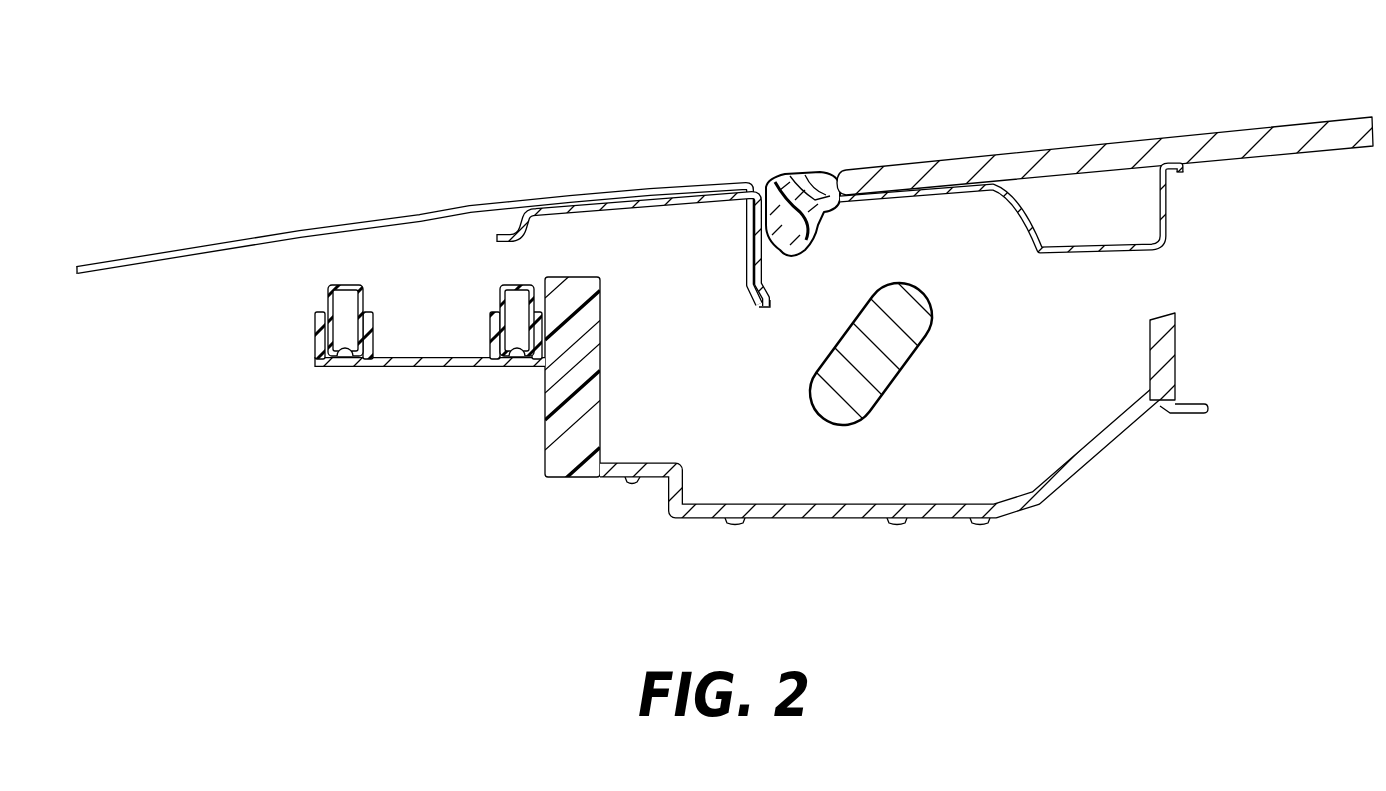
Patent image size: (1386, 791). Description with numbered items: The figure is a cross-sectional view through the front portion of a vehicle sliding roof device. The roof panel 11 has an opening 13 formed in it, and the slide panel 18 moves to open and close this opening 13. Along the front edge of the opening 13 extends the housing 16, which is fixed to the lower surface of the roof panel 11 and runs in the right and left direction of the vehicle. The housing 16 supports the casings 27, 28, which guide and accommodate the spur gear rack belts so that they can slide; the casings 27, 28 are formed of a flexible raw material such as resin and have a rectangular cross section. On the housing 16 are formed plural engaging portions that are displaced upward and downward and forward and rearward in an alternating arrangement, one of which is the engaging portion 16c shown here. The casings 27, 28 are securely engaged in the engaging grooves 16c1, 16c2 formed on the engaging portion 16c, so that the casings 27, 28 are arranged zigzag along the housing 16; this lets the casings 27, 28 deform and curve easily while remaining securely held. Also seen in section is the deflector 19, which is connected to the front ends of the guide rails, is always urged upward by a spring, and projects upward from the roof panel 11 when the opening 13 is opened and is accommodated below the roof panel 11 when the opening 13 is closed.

The roof panel 11 is at (217, 245).
The opening 13 is at (766, 180).
The slide panel 18 is at (1232, 142).
The housing 16 is at (568, 457).
The engaging portion 16c is at (416, 370).
The engaging groove 16c1 is at (517, 349).
The engaging groove 16c2 is at (343, 349).
The casing 27 is at (500, 288).
The casing 28 is at (326, 294).
The deflector 19 is at (880, 368).